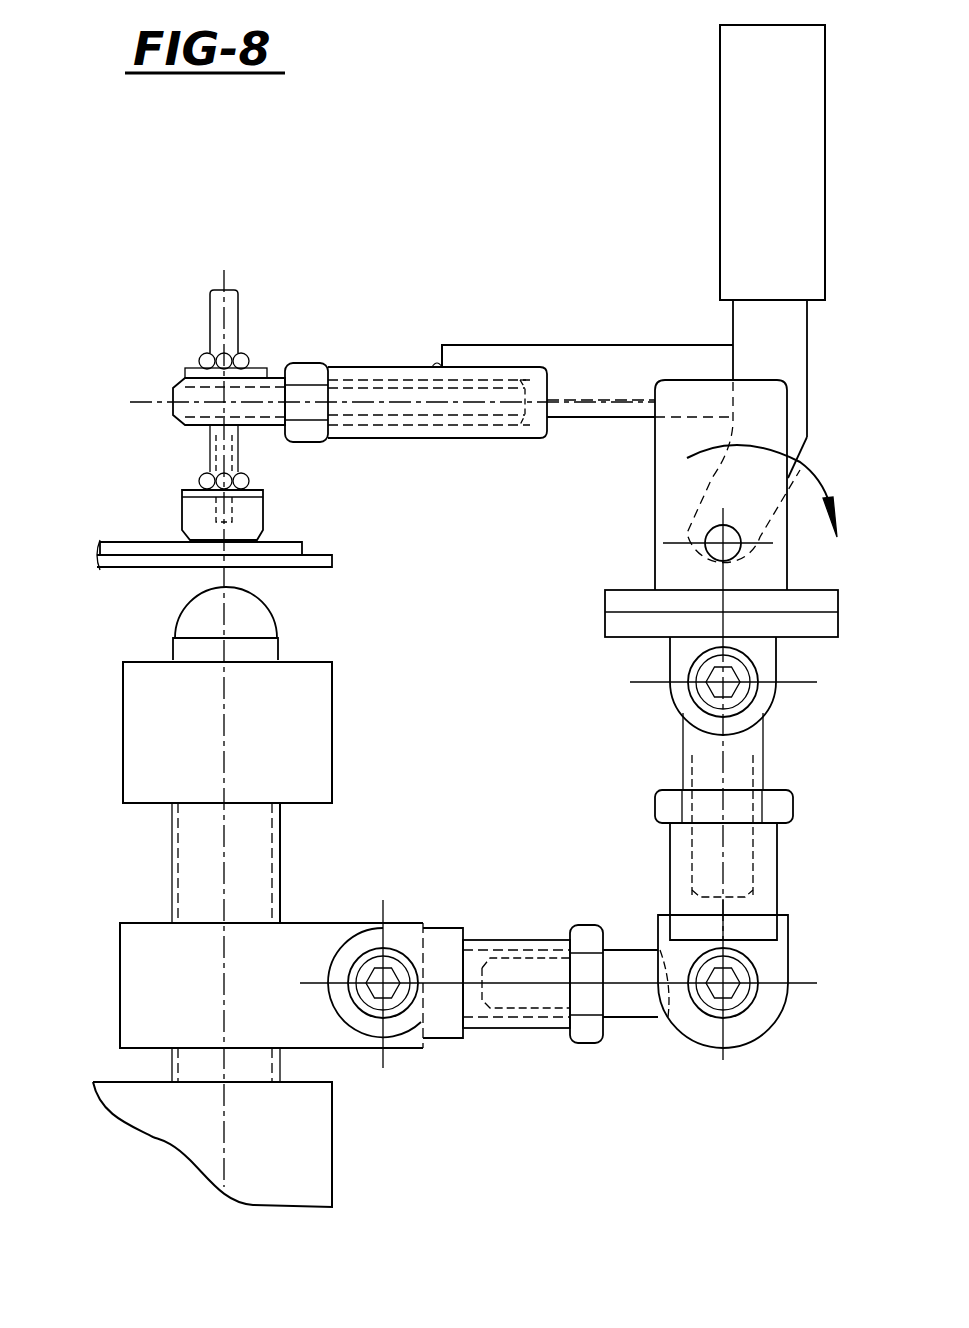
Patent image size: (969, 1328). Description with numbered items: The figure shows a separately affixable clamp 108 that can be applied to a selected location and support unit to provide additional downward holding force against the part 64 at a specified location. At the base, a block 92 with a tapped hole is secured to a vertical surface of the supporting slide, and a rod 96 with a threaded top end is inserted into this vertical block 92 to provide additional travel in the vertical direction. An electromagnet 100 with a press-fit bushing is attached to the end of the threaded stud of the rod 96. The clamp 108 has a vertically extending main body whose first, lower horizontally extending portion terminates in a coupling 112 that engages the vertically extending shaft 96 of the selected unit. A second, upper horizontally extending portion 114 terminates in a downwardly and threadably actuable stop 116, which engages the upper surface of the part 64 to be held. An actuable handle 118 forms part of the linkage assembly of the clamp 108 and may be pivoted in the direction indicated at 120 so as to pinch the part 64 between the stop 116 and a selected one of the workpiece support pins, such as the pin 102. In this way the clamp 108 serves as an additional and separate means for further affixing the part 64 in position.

The part 64 is at (135, 540).
The block 92 is at (335, 1167).
The rod 96 is at (198, 848).
The electromagnet 100 is at (332, 742).
The workpiece support pin 102 is at (165, 602).
The clamp 108 is at (635, 262).
The coupling 112 is at (330, 930).
The upper portion 114 is at (377, 367).
The stop 116 is at (263, 508).
The handle 118 is at (728, 130).
The pivot direction 120 is at (822, 483).